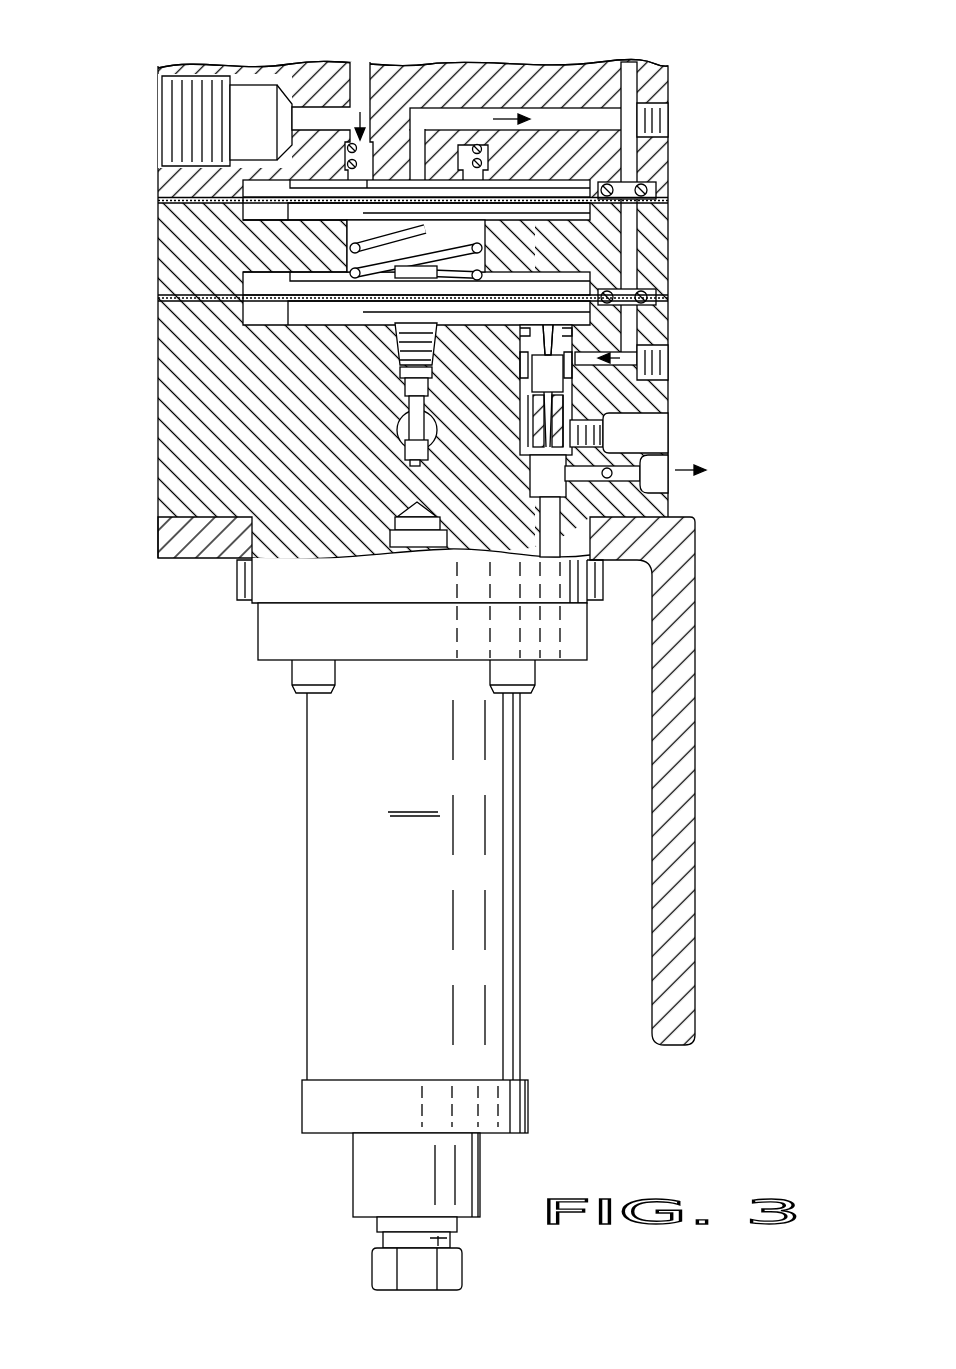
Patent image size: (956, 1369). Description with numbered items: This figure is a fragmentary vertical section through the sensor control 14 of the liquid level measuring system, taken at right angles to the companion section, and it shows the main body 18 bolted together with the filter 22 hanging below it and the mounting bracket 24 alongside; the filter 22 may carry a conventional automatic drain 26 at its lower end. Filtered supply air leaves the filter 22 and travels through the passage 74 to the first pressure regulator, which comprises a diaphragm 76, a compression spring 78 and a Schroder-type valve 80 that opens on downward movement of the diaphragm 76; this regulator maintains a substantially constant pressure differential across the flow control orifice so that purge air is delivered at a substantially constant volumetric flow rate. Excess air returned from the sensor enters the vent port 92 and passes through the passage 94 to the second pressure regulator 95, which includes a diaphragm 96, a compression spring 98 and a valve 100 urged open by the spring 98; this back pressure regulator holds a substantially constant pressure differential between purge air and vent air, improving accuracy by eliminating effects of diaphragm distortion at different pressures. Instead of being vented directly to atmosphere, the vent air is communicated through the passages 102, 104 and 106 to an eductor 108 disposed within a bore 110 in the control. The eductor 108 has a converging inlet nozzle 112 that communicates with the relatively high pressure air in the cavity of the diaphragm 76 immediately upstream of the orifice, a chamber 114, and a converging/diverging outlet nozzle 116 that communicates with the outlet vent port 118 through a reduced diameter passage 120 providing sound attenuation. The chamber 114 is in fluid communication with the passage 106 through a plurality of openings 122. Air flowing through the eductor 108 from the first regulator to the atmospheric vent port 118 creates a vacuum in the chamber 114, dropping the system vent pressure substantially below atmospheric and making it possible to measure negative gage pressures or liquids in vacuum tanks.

The sensor control 14 is at (126, 428).
The main body 18 is at (172, 237).
The filter 22 is at (420, 887).
The mounting bracket 24 is at (685, 848).
The automatic drain 26 is at (387, 1239).
The passage 74 is at (406, 432).
The diaphragm 76 is at (279, 322).
The compression spring 78 is at (487, 263).
The Schroder-type valve 80 is at (396, 374).
The vent port 92 is at (165, 150).
The passage 94 is at (302, 104).
The second pressure regulator 95 is at (256, 207).
The diaphragm 96 is at (277, 222).
The compression spring 98 is at (482, 168).
The valve 100 is at (422, 178).
The passage 102 is at (505, 108).
The passage 104 is at (640, 218).
The passage 106 is at (662, 362).
The eductor 108 is at (527, 400).
The bore 110 is at (518, 366).
The converging inlet nozzle 112 is at (546, 362).
The chamber 114 is at (533, 378).
The converging/diverging outlet nozzle 116 is at (529, 458).
The outlet vent port 118 is at (665, 481).
The reduced diameter passage 120 is at (609, 468).
The openings 122 is at (598, 372).